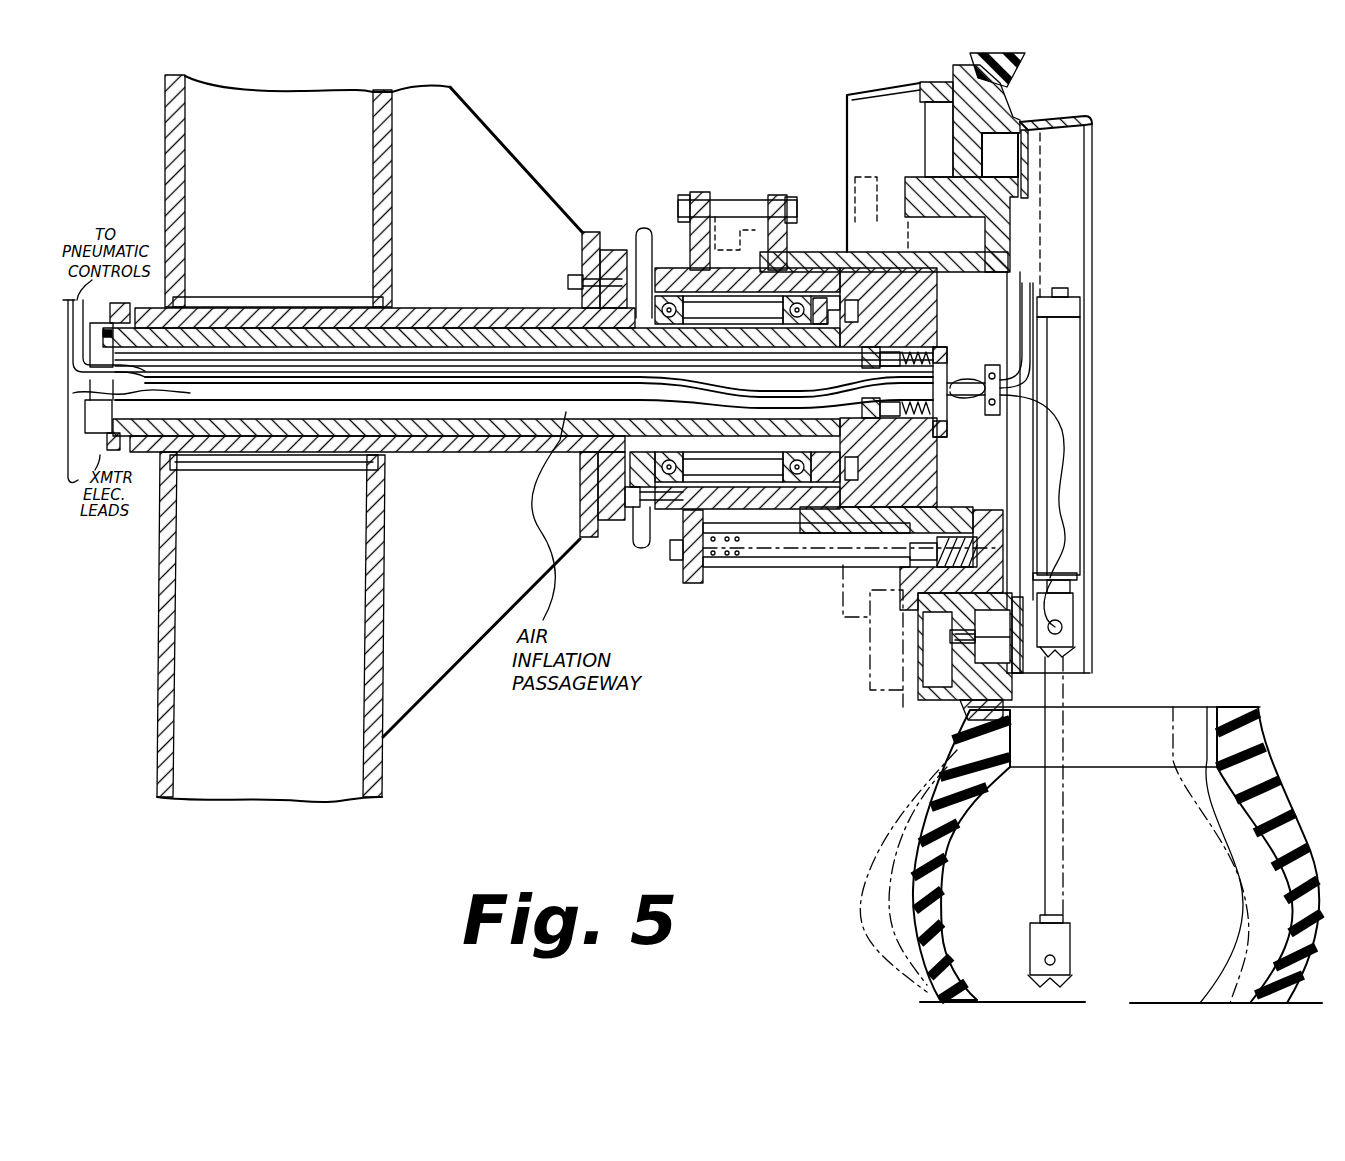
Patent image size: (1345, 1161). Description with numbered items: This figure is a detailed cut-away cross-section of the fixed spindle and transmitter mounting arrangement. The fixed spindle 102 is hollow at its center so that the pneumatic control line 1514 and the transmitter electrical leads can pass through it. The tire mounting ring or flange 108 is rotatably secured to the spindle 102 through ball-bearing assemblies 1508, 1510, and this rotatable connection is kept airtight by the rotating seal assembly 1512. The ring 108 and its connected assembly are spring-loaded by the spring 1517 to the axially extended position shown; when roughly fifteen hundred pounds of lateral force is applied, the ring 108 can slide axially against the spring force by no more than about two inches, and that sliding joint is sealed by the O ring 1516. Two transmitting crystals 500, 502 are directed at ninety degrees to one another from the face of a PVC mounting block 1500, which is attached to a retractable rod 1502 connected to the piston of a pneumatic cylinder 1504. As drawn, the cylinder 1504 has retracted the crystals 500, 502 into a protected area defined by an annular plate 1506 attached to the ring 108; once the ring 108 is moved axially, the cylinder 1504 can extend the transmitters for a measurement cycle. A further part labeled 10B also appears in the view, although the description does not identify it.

The tire mounting ring 108 is at (1010, 70).
The annular plate 1506 is at (1088, 118).
The fixed spindle 102 is at (655, 268).
The ball-bearing assembly 1510 is at (828, 252).
The O ring 1516 is at (933, 280).
The rotating seal assembly 1512 is at (935, 338).
The pneumatic cylinder 1504 is at (1073, 410).
The retractable rod 1502 is at (1068, 592).
The PVC mounting block 1500 is at (1072, 612).
The transmitting crystal 500 is at (1080, 634).
The transmitting crystal 502 is at (1070, 657).
The wheel rim 10B is at (982, 713).
The pneumatic control line 1514 is at (98, 298).
The ball-bearing assembly 1508 is at (680, 508).
The spring 1517 is at (732, 565).